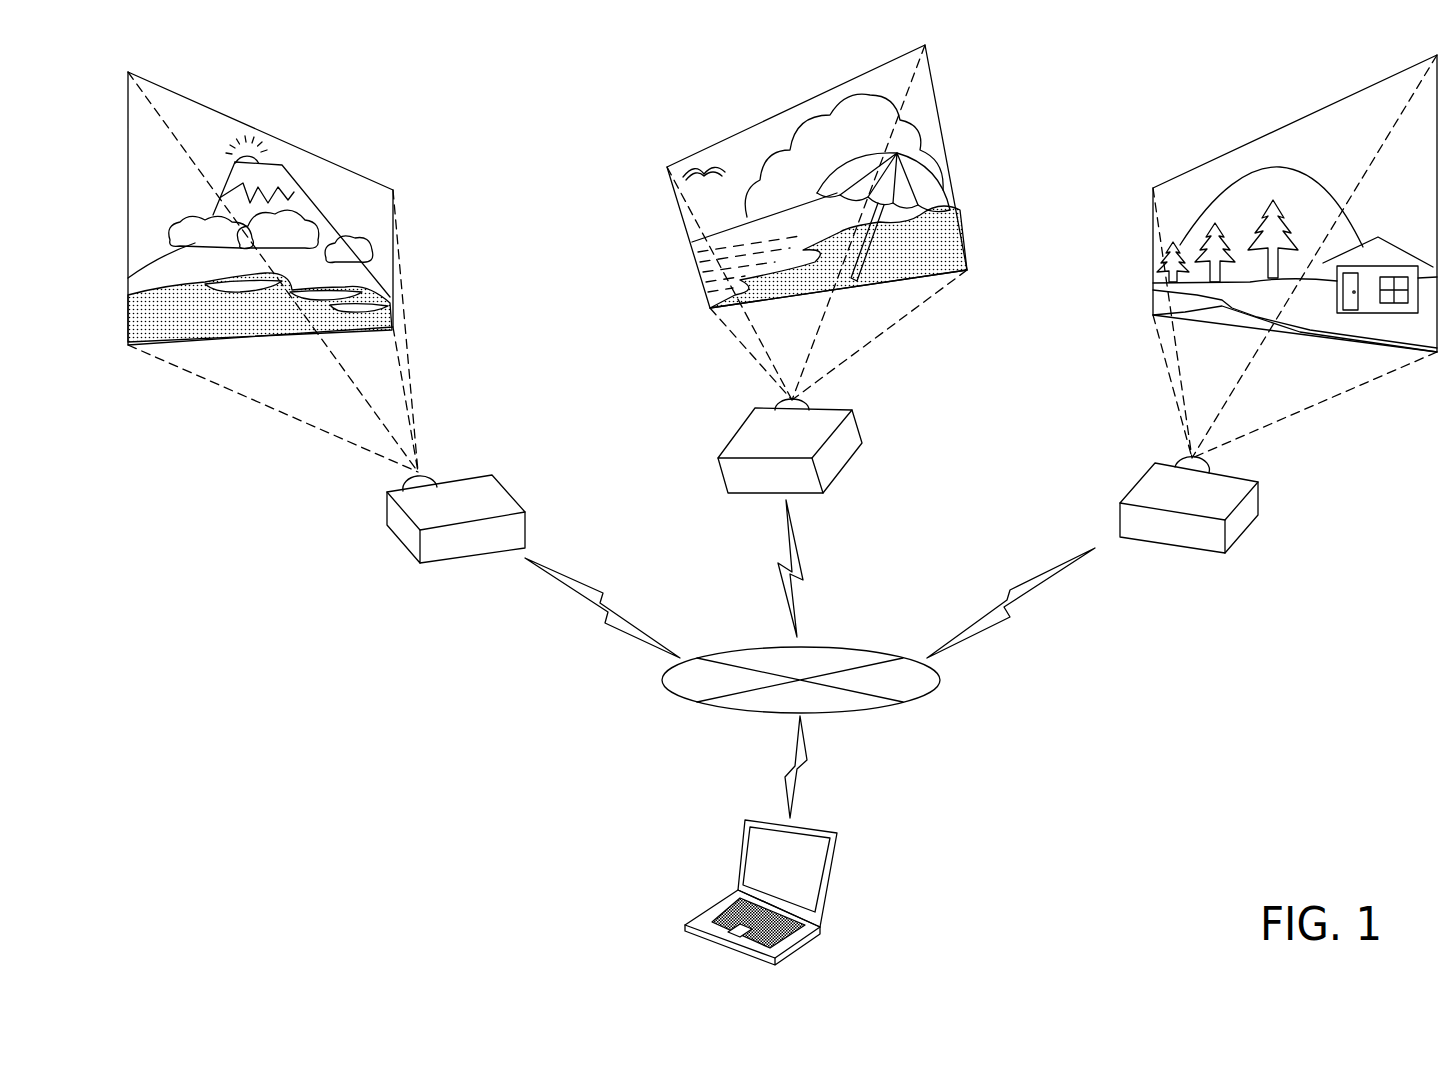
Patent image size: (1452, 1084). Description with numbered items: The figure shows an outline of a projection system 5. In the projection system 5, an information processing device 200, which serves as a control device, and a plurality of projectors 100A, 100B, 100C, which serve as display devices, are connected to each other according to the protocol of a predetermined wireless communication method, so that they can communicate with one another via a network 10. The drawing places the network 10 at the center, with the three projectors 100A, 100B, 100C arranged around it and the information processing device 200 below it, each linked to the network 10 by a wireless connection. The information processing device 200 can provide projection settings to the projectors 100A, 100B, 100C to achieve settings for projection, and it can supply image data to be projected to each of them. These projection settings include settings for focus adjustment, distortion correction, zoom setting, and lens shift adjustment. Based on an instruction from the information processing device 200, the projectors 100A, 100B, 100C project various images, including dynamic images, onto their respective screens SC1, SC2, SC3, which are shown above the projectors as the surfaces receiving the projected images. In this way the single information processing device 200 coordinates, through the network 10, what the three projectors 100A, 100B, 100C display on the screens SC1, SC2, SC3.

The screen SC1 is at (302, 150).
The screen SC2 is at (757, 124).
The screen SC3 is at (1227, 154).
The projector 100A is at (387, 528).
The projector 100B is at (845, 467).
The projector 100C is at (1250, 528).
The network 10 is at (930, 692).
The information processing device 200 is at (837, 853).
The projection system 5 is at (391, 745).